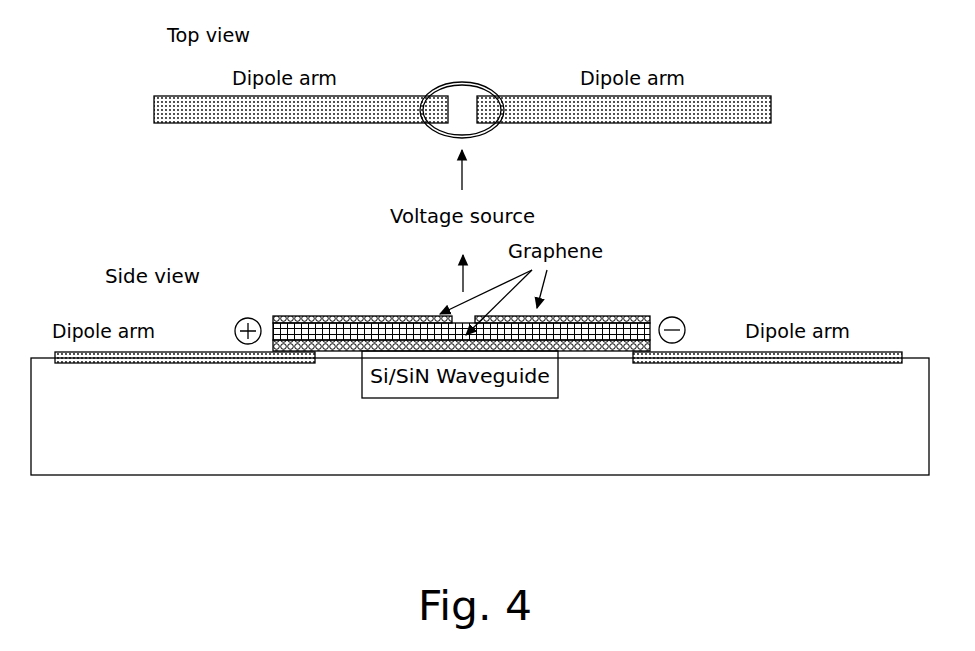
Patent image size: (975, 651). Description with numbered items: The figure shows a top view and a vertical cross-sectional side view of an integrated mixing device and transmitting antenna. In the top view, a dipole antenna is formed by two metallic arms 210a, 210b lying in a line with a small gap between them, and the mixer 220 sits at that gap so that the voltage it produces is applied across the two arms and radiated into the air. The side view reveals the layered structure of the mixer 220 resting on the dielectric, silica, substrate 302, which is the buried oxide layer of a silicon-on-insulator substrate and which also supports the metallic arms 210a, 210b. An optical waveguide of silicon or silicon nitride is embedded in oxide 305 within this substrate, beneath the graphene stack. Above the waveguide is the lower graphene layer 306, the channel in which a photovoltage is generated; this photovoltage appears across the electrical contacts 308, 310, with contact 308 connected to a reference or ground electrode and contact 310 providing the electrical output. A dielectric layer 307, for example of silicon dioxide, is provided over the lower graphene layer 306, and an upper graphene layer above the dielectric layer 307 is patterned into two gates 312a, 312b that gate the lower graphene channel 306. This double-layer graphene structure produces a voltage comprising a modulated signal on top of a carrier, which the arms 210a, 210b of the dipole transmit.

The metallic arm 210a is at (188, 95).
The metallic arm 210b is at (736, 95).
The mixer 220 is at (488, 66).
The buried oxide layer 302 is at (480, 416).
The oxide 305 is at (742, 421).
The lower graphene layer 306 is at (567, 353).
The dielectric layer 307 is at (548, 332).
The electrical contact 308 is at (252, 318).
The electrical contact 310 is at (707, 312).
The gate 312a is at (333, 316).
The gate 312b is at (640, 320).